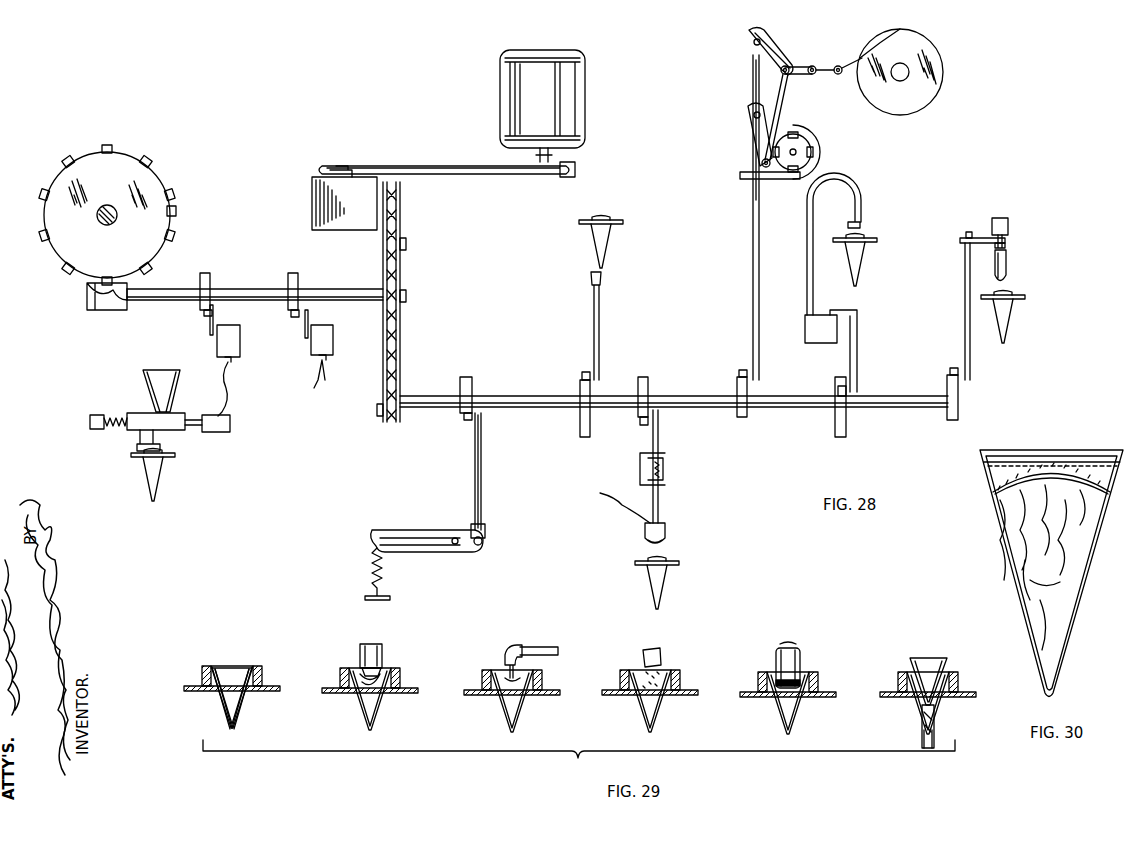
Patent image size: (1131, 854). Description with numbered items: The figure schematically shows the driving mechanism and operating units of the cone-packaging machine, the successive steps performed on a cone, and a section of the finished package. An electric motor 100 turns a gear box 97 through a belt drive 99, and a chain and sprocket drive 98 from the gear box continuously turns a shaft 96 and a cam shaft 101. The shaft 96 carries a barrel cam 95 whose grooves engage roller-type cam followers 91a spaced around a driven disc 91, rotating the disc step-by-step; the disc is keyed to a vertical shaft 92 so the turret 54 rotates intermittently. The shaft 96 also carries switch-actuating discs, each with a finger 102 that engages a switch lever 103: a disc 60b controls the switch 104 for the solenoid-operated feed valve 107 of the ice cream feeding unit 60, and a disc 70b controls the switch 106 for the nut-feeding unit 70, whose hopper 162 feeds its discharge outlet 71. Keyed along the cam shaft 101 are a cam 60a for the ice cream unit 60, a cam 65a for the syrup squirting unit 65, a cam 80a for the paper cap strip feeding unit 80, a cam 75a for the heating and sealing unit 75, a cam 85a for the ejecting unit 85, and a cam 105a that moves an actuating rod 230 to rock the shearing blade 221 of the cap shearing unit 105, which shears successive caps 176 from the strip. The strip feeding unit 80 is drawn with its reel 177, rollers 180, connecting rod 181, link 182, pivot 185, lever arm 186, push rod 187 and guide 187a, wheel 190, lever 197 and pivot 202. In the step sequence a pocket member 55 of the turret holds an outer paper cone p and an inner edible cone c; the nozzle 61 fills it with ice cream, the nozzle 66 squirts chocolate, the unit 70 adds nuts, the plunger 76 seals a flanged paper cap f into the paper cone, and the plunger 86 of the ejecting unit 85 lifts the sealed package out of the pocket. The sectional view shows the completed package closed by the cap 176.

In FIG. 28, the driven disc 91 is at (108, 163).
In FIG. 28, the vertical shaft 92 is at (110, 205).
In FIG. 28, the roller-type cam followers 91a is at (178, 210).
In FIG. 28, the barrel cam 95 is at (115, 308).
In FIG. 28, the continuously driven shaft 96 is at (148, 301).
In FIG. 28, the disc 70b is at (205, 272).
In FIG. 28, the disc 60b is at (293, 272).
In FIG. 28, the finger 102 is at (293, 318).
In FIG. 28, the switch lever 103 is at (306, 338).
In FIG. 28, the switch 104 is at (326, 342).
In FIG. 28, the switch 106 is at (222, 342).
In FIG. 28, the hopper 162 is at (155, 390).
In FIG. 28, the nut-feeding unit 70 is at (190, 432).
In FIG. 29, the nut-feeding unit 70 is at (664, 652).
In FIG. 28, the discharge outlet 71 is at (140, 432).
In FIG. 28, the turret 54 is at (176, 460).
In FIG. 29, the turret 54 is at (200, 684).
In FIG. 28, the gear box 97 is at (326, 183).
In FIG. 28, the belt drive 99 is at (463, 165).
In FIG. 28, the electric motor 100 is at (510, 88).
In FIG. 28, the chain and sprocket drive 98 is at (402, 248).
In FIG. 28, the cam shaft 101 is at (528, 396).
In FIG. 28, the cam 105a is at (466, 377).
In FIG. 28, the cap shearing unit 105 is at (474, 471).
In FIG. 28, the actuating rod 230 is at (482, 496).
In FIG. 28, the rockable shearing blade 221 is at (432, 530).
In FIG. 28, the cam 85a is at (581, 428).
In FIG. 28, the ejecting unit 85 is at (602, 305).
In FIG. 29, the ejecting unit 85 is at (940, 722).
In FIG. 28, the cam 75a is at (643, 377).
In FIG. 28, the heating and sealing unit 75 is at (667, 531).
In FIG. 29, the heating and sealing unit 75 is at (791, 641).
In FIG. 28, the cam 80a is at (738, 385).
In FIG. 28, the cam 65a is at (848, 428).
In FIG. 28, the cam 60a is at (957, 390).
In FIG. 28, the push rod 187 is at (752, 242).
In FIG. 28, the rod guide 187a is at (752, 81).
In FIG. 28, the lever arm 186 is at (746, 46).
In FIG. 28, the pivot 185 is at (768, 46).
In FIG. 28, the link 182 is at (791, 67).
In FIG. 28, the connecting rod 181 is at (812, 82).
In FIG. 28, the roller 180 is at (839, 78).
In FIG. 28, the film reel 177 is at (920, 45).
In FIG. 28, the paper cap supplying unit 80 is at (938, 110).
In FIG. 28, the pivot 202 is at (748, 116).
In FIG. 28, the lever 197 is at (758, 130).
In FIG. 28, the cutter wheel 190 is at (818, 164).
In FIG. 28, the syrup squirting unit 65 is at (808, 236).
In FIG. 29, the syrup squirting unit 65 is at (546, 647).
In FIG. 28, the ice cream feeding unit 60 is at (964, 311).
In FIG. 29, the ice cream feeding unit 60 is at (388, 648).
In FIG. 28, the solenoid-operated feed valve 107 is at (1008, 222).
In FIG. 28, the nozzle 61 is at (1007, 278).
In FIG. 29, the nozzle 61 is at (363, 672).
In FIG. 29, the pocket member 55 is at (216, 667).
In FIG. 29, the edible cone c is at (239, 684).
In FIG. 30, the edible cone c is at (1093, 562).
In FIG. 29, the paper cone p is at (221, 704).
In FIG. 30, the paper cone p is at (1006, 556).
In FIG. 29, the nozzle 66 is at (507, 648).
In FIG. 29, the plunger 76 is at (779, 670).
In FIG. 29, the flanged paper cap f is at (801, 681).
In FIG. 29, the plunger 86 is at (922, 740).
In FIG. 30, the cap 176 is at (1042, 466).